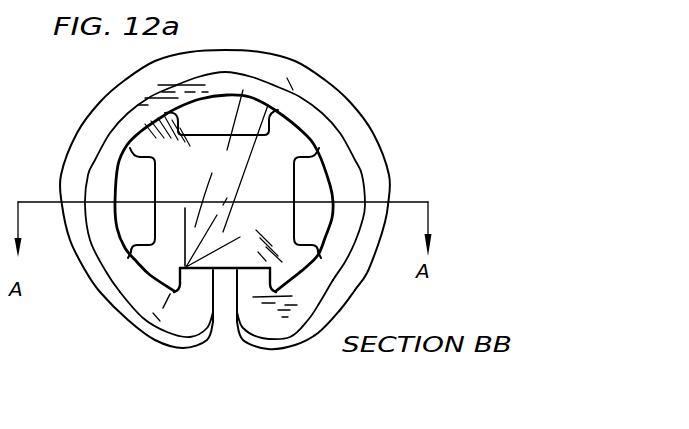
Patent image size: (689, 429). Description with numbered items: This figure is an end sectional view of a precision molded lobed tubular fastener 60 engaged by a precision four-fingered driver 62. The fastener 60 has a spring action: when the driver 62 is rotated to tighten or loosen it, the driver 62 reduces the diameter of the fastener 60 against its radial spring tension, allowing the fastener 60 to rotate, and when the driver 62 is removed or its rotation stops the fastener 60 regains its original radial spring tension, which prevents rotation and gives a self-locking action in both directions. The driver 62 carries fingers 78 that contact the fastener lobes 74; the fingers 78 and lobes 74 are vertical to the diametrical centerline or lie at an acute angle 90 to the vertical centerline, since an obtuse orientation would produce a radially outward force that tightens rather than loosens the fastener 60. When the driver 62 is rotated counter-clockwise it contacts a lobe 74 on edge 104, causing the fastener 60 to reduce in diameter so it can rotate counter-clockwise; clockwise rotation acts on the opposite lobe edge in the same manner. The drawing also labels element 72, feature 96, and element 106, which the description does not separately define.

The lobed tubular fastener 60 is at (348, 185).
The driver 62 is at (227, 141).
The T-shaped slot 72 is at (224, 363).
The fastener lobe 74 is at (203, 298).
The finger 78 is at (290, 264).
The acute angle 90 is at (219, 158).
The pivot line 96 is at (248, 168).
The edge 104 is at (200, 350).
The right lip 106 is at (243, 348).